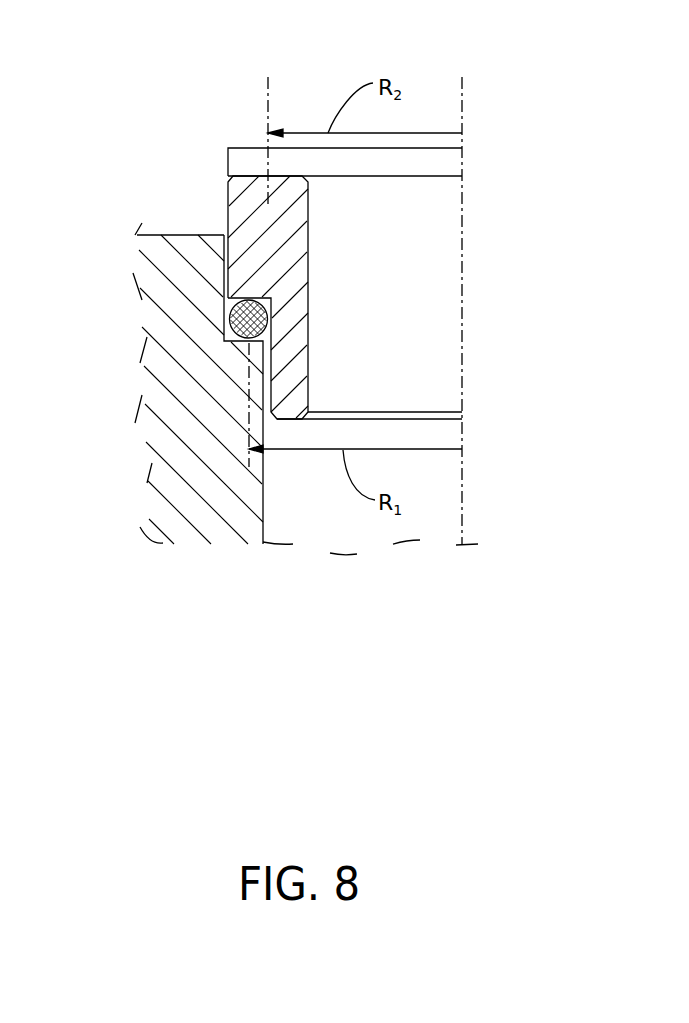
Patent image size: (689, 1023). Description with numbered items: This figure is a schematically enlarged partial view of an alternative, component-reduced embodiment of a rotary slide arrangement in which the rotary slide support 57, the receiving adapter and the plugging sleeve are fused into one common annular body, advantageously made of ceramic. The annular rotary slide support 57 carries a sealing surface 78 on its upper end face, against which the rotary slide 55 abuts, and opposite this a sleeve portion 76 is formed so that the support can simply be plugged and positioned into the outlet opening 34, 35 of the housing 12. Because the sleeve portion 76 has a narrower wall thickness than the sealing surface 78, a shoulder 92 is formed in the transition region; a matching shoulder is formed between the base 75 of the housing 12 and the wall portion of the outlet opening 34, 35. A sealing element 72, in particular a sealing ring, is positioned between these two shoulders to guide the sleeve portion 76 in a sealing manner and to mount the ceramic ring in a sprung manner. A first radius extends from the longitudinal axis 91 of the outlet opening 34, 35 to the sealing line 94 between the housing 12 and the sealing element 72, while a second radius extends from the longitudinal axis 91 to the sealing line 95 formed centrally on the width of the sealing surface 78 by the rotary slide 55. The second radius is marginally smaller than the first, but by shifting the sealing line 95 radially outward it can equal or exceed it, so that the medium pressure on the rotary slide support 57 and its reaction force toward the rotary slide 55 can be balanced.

The housing 12 is at (150, 492).
The outlet opening 34 is at (319, 586).
The outlet opening 35 is at (325, 527).
The rotary slide 55 is at (233, 162).
The rotary slide support 57 is at (257, 207).
The sealing element 72 is at (247, 320).
The base of the housing 75 is at (155, 235).
The sleeve portion 76 is at (284, 343).
The sealing surface 78 is at (252, 174).
The longitudinal axis 91 is at (463, 507).
The shoulder 92 is at (283, 298).
The sealing line 94 is at (249, 467).
The sealing line 95 is at (267, 90).